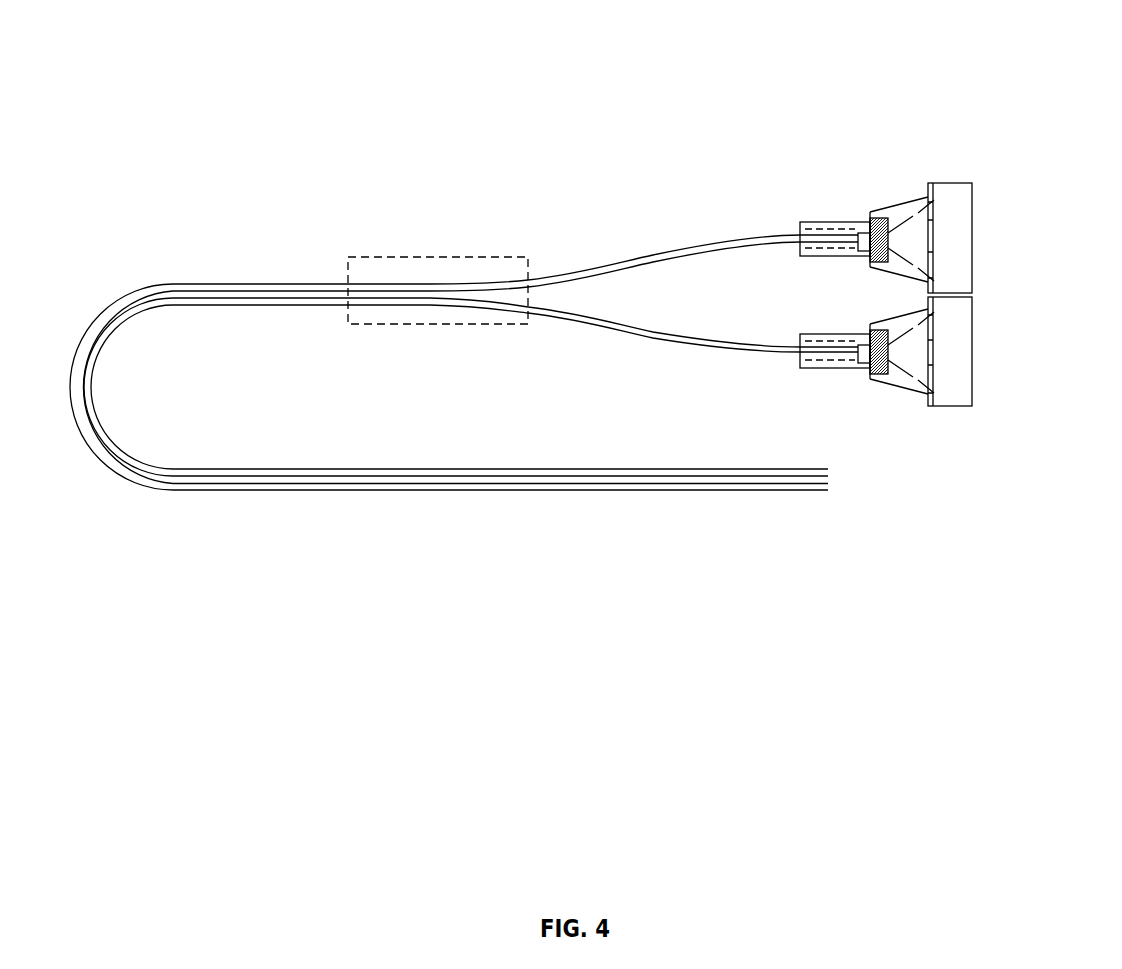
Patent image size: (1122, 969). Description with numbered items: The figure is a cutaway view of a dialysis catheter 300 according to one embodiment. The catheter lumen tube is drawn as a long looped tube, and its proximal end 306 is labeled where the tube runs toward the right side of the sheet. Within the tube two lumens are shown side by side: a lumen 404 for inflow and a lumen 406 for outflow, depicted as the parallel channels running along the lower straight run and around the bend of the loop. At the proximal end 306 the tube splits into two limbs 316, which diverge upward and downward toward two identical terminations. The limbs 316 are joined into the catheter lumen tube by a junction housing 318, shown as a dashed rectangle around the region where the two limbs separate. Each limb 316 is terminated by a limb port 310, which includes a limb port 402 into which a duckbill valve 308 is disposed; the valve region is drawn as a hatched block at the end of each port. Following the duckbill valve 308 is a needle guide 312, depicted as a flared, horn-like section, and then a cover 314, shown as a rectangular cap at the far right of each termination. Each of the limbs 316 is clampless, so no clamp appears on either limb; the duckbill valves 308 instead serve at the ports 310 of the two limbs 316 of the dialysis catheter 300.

The dialysis catheter 300 is at (767, 72).
The proximal end 306 is at (310, 305).
The duckbill valve 308 is at (858, 238).
The limb port 310 is at (815, 232).
The needle guide 312 is at (893, 200).
The cover 314 is at (958, 261).
The limbs 316 is at (703, 248).
The junction housing 318 is at (397, 278).
The limb port 402 is at (817, 231).
The lumen for inflow 404 is at (220, 487).
The lumen for outflow 406 is at (360, 477).